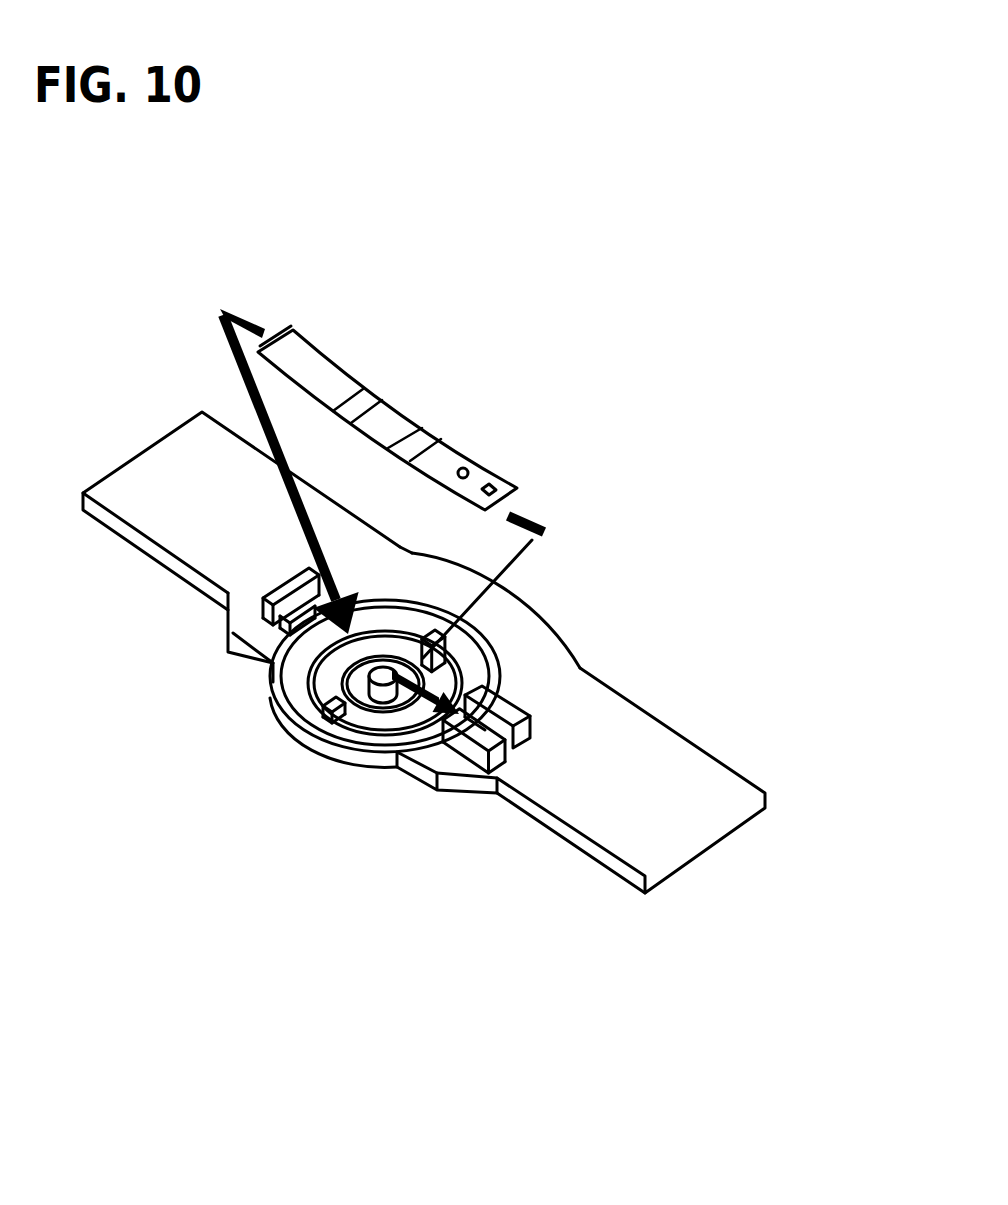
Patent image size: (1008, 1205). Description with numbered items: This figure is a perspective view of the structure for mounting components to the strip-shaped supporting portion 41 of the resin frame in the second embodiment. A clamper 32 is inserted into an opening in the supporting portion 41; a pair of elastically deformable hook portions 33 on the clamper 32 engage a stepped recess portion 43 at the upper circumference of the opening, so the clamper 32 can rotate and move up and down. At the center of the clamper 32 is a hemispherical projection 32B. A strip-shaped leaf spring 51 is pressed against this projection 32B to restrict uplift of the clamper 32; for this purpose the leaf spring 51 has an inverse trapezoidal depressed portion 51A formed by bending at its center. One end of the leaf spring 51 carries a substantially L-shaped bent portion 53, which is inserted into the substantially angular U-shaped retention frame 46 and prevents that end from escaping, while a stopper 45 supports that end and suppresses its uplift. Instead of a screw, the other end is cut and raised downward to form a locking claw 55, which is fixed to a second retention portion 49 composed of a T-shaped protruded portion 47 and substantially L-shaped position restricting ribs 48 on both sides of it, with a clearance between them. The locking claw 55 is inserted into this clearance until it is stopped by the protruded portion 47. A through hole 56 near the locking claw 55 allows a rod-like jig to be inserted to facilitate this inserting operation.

The supporting portion 41 is at (600, 820).
The clamper 32 is at (452, 712).
The hemispherical projection 32B is at (371, 676).
The stepped recess portion 43 is at (465, 665).
The hook portions 33 is at (317, 737).
The stopper 45 is at (290, 625).
The retention frame 46 is at (268, 597).
The protruded portion 47 is at (513, 670).
The position restricting rib 48 is at (525, 720).
The second retention portion 49 is at (673, 680).
The leaf spring 51 is at (312, 370).
The inverse trapezoidal depressed portion 51A is at (390, 403).
The bent portion 53 is at (262, 330).
The locking claw 55 is at (494, 490).
The through hole 56 is at (467, 471).